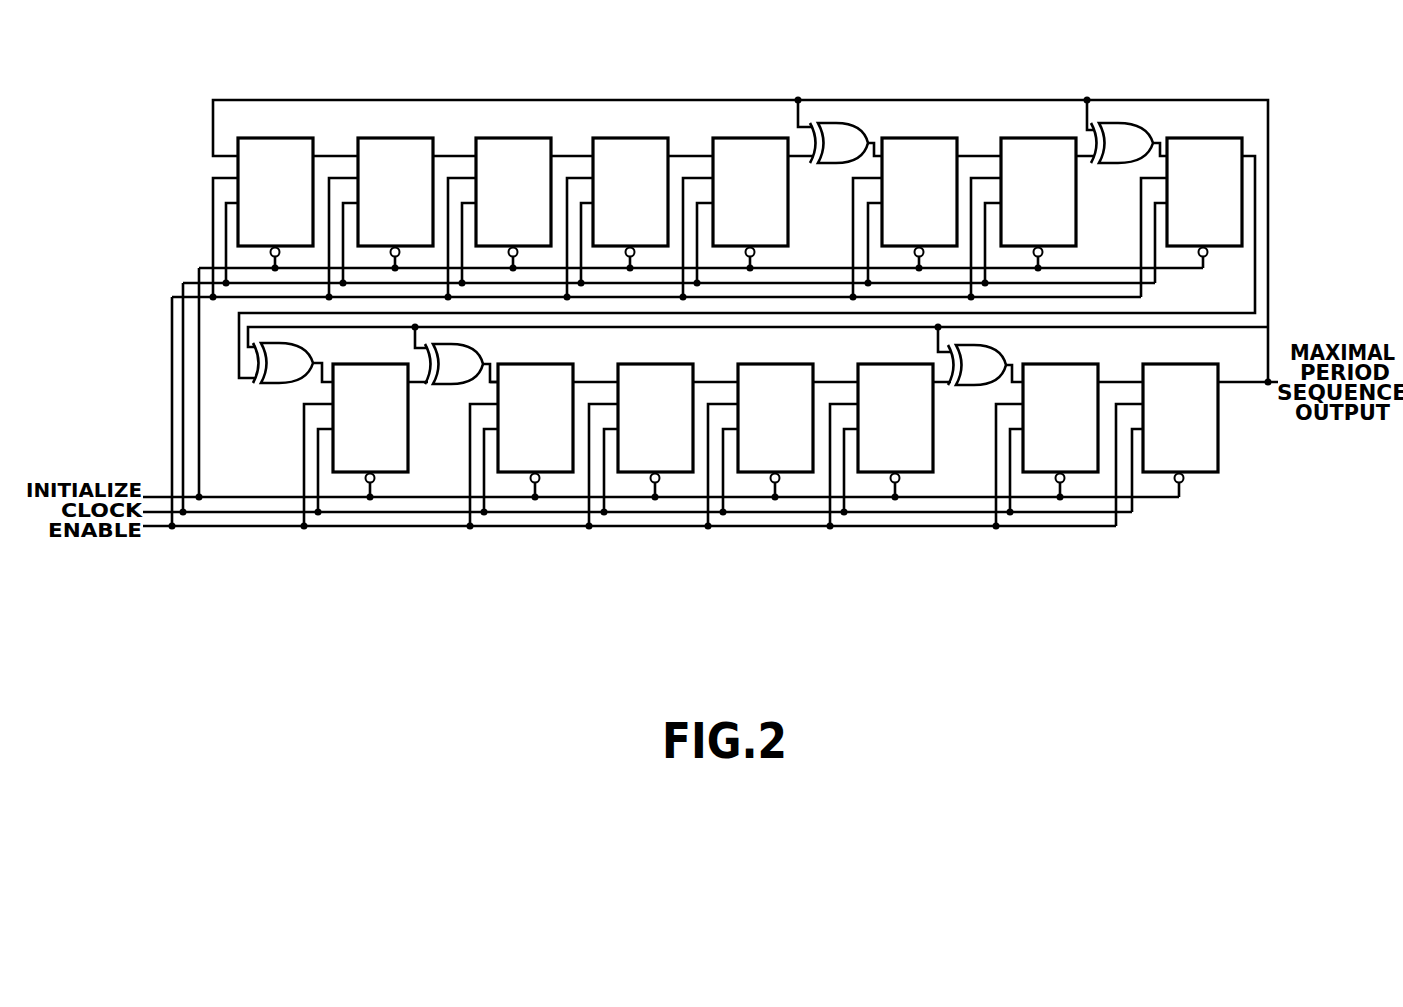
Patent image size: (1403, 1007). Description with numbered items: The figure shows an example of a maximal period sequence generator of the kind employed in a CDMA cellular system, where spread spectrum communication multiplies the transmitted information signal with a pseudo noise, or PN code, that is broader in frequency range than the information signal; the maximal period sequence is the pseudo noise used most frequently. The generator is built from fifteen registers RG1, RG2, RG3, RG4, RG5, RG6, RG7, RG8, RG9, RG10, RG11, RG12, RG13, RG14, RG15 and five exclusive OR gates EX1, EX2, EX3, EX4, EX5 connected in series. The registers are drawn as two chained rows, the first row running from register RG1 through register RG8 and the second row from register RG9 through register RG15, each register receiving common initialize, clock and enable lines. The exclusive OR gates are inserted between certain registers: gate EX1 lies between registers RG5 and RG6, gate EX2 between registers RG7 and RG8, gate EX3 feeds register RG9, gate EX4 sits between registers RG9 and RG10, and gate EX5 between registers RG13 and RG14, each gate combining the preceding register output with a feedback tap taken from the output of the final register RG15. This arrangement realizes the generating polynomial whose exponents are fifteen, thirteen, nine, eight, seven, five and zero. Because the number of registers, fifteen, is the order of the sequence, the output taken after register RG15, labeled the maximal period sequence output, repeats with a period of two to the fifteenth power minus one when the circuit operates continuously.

The register RG1 is at (274, 138).
The register RG2 is at (391, 138).
The register RG3 is at (507, 140).
The register RG4 is at (627, 138).
The register RG5 is at (745, 138).
The register RG6 is at (920, 138).
The register RG7 is at (1035, 138).
The register RG8 is at (1203, 138).
The register RG9 is at (388, 472).
The register RG10 is at (553, 472).
The register RG11 is at (672, 472).
The register RG12 is at (797, 472).
The register RG13 is at (917, 472).
The register RG14 is at (1080, 472).
The register RG15 is at (1200, 472).
The exclusive OR gate EX1 is at (833, 123).
The exclusive OR gate EX2 is at (1122, 123).
The exclusive OR gate EX3 is at (268, 385).
The exclusive OR gate EX4 is at (450, 385).
The exclusive OR gate EX5 is at (975, 388).